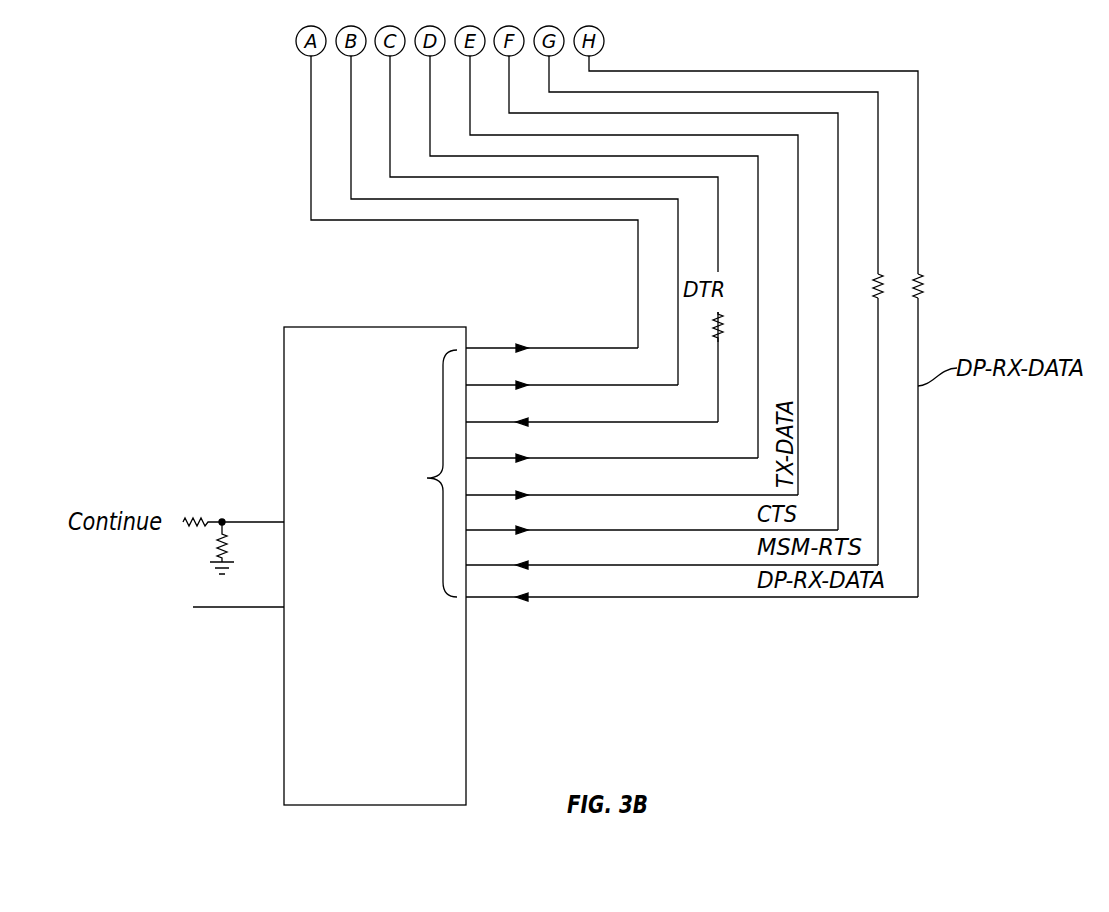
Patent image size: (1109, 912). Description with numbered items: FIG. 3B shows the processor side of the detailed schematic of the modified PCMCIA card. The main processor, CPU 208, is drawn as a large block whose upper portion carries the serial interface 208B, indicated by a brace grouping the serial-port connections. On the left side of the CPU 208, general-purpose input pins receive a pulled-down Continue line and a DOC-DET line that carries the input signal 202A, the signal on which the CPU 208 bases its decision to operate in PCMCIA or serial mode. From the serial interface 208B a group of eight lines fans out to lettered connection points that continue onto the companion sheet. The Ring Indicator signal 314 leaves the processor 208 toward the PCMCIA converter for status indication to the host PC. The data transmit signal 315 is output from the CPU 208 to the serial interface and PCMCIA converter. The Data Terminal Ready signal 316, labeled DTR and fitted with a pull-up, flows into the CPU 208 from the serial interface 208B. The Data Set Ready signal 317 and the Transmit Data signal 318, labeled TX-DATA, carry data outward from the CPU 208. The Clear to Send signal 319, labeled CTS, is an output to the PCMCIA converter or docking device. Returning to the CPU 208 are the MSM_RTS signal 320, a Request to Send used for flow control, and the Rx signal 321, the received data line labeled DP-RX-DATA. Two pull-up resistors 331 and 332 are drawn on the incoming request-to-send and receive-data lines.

The CPU 208 is at (311, 326).
The serial interface 208B is at (414, 473).
The input signal 202A is at (187, 618).
The Ring Indicator signal 314 is at (617, 347).
The data transmit signal 315 is at (617, 384).
The Data Terminal Ready signal 316 is at (617, 421).
The Data Set Ready signal 317 is at (617, 457).
The Transmit Data signal 318 is at (617, 494).
The Clear to Send signal 319 is at (617, 529).
The MSM_RTS signal 320 is at (617, 564).
The Rx signal 321 is at (617, 596).
The pull-up resistor 331 is at (921, 276).
The pull-up resistor 332 is at (886, 286).